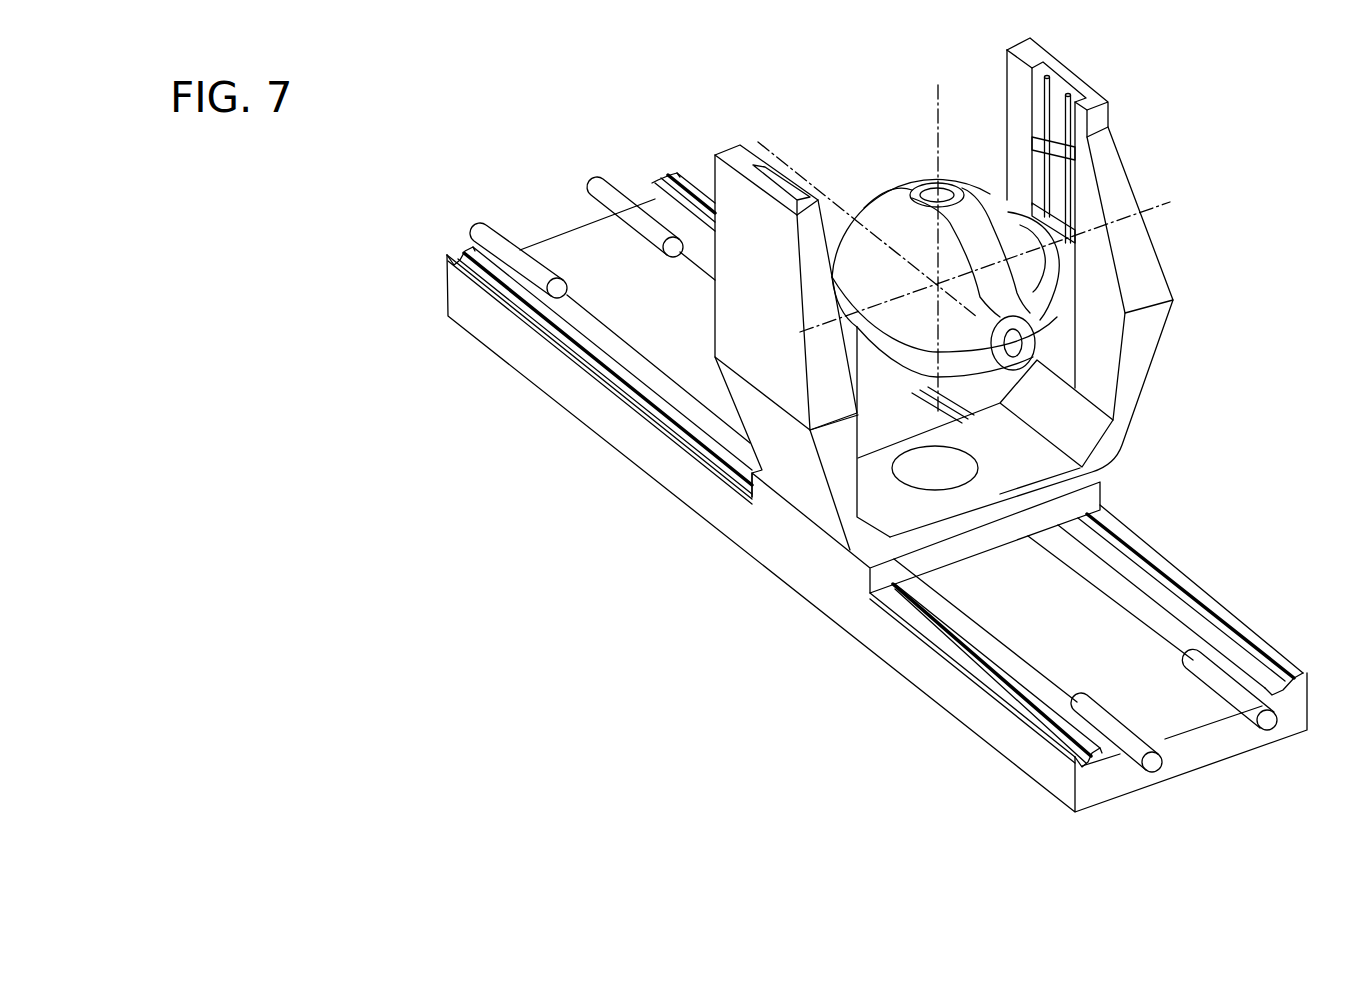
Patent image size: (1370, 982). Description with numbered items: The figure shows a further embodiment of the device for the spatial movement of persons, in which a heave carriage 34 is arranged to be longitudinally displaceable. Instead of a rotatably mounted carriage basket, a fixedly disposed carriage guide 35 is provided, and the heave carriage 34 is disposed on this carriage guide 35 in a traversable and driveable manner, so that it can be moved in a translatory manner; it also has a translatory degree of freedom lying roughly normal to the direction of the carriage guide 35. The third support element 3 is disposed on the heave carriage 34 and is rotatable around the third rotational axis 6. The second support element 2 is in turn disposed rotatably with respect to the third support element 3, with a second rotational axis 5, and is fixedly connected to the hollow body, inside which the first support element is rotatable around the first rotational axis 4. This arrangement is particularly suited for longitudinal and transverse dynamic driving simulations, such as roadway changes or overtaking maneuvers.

The second support element 2 is at (908, 187).
The third support element 3 is at (1050, 325).
The first rotational axis 4 is at (938, 108).
The second rotational axis 5 is at (770, 152).
The third rotational axis 6 is at (1152, 205).
The heave carriage 34 is at (1150, 292).
The carriage guide 35 is at (822, 588).